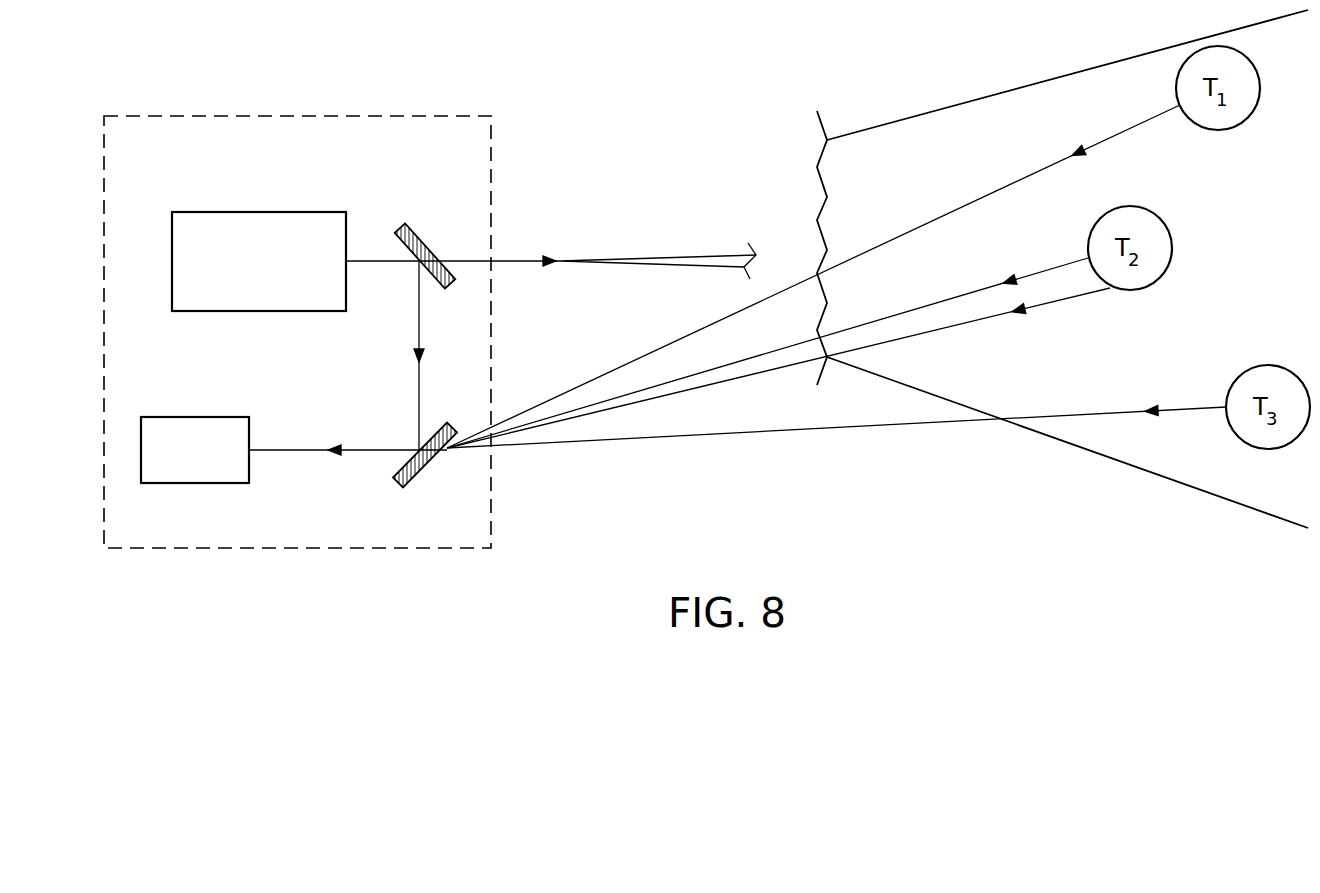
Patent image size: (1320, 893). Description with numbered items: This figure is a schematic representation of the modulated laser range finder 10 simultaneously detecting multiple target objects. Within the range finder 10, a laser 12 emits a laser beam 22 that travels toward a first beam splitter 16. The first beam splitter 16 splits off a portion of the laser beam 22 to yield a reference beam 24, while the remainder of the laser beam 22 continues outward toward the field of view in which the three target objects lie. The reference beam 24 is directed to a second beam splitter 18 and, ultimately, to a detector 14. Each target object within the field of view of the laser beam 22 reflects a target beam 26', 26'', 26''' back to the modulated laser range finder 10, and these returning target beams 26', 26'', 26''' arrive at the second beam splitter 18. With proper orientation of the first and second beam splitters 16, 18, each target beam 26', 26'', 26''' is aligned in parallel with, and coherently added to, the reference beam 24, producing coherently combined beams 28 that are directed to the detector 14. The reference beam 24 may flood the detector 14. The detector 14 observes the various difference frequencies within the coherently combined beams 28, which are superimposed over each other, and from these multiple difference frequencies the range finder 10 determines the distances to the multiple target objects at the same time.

The modulated laser range finder 10 is at (250, 116).
The laser 12 is at (255, 212).
The detector 14 is at (198, 417).
The first beam splitter 16 is at (417, 230).
The second beam splitter 18 is at (415, 480).
The laser beam 22 is at (372, 265).
The reference beam 24 is at (423, 337).
The target beam 26' is at (813, 276).
The target beam 26'' is at (778, 342).
The target beam 26''' is at (836, 401).
The coherently combined beams 28 is at (313, 450).